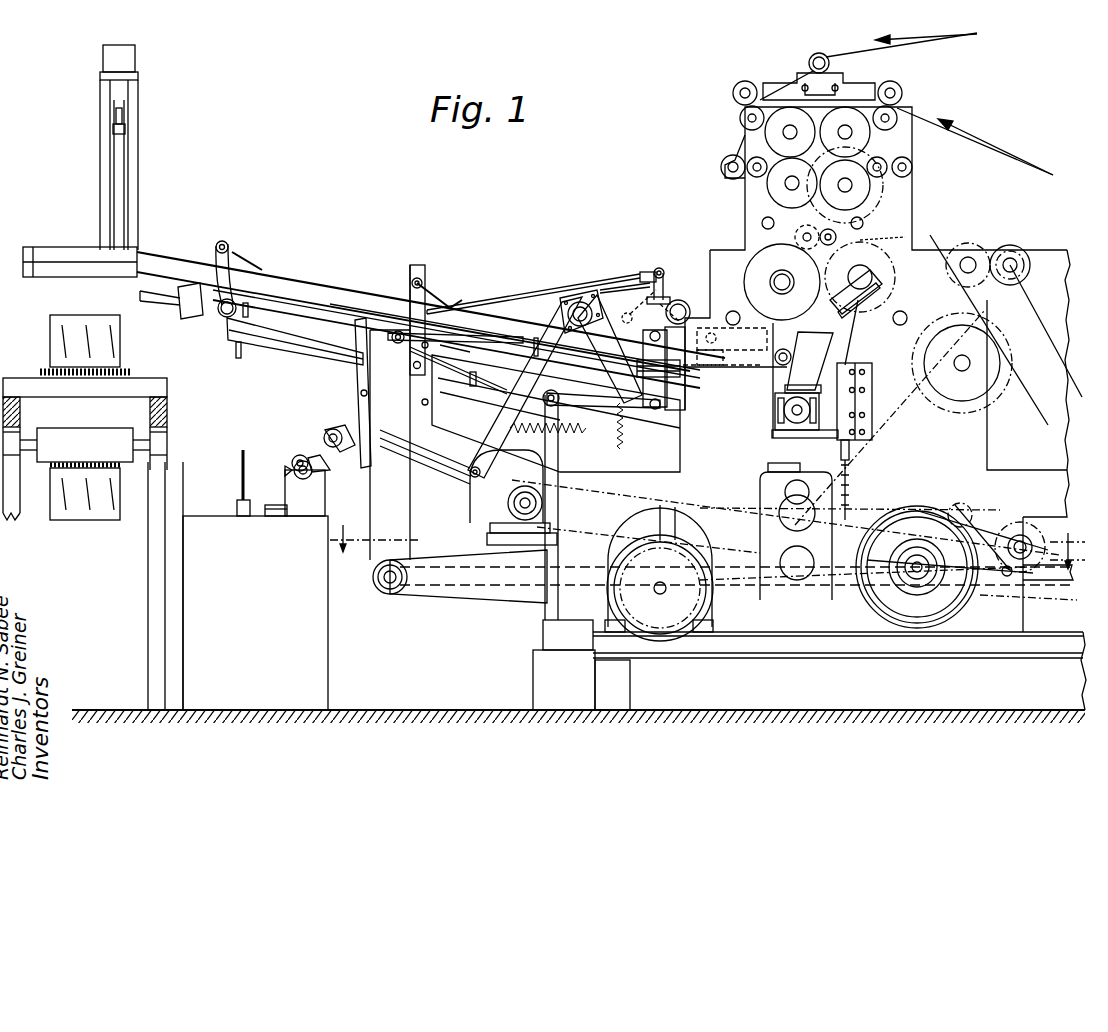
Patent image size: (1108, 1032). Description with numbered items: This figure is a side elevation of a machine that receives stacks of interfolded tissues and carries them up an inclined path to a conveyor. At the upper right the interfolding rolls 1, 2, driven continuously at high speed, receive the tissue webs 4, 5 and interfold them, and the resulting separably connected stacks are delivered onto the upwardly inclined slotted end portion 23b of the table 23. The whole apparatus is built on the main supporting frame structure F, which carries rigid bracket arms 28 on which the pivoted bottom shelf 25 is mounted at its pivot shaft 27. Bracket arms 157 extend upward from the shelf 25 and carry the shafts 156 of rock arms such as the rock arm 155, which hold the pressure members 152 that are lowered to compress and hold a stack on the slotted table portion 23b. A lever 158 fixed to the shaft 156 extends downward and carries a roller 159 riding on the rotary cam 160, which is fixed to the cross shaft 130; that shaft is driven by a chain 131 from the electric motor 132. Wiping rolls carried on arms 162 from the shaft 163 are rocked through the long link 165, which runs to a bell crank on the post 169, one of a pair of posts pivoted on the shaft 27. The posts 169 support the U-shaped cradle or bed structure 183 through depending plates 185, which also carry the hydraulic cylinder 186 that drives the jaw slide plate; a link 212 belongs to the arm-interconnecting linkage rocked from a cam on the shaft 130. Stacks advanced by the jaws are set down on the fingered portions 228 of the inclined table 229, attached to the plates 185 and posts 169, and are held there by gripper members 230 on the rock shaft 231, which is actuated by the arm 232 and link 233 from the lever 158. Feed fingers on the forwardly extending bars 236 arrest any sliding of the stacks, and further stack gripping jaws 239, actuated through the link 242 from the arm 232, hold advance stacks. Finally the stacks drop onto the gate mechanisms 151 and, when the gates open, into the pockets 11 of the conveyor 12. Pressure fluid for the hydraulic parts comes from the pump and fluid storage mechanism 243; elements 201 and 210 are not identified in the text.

The interfolding roll 1 is at (742, 262).
The interfolding roll 2 is at (850, 255).
The main supporting frame structure F is at (905, 237).
The web of tissue material 4 is at (707, 301).
The web of tissue material 5 is at (975, 150).
The pocket or carrier 11 is at (120, 340).
The conveyor 12 is at (115, 372).
The table 23 is at (768, 376).
The slotted end portion of the table 23b is at (668, 380).
The pivoted bottom shelf 25 is at (1060, 580).
The pivot shaft 27 is at (374, 585).
The bracket arm 28 is at (435, 597).
The cross shaft 130 is at (520, 494).
The chain 131 is at (634, 498).
The electric motor 132 is at (932, 497).
The gate mechanism 151 is at (65, 262).
The pressure member 152 is at (700, 300).
The rock arm 155 is at (622, 290).
The shaft 156 is at (580, 302).
The bracket arm 157 is at (595, 360).
The lever 158 is at (556, 330).
The roller 159 is at (468, 478).
The rotary cam 160 is at (472, 512).
The arm 162 is at (628, 302).
The shaft 163 is at (663, 298).
The link 165 is at (530, 292).
The post 169 is at (378, 494).
The cradle or bed structure 183 is at (551, 407).
The plate 185 is at (360, 379).
The hydraulic cylinder 186 is at (298, 350).
The feed tray 201 is at (240, 275).
The pivot arm 210 is at (218, 244).
The link 212 is at (444, 492).
The fingered portion 228 is at (470, 334).
The inclined table 229 is at (300, 300).
The gripper member 230 is at (455, 304).
The rock shaft 231 is at (425, 285).
The arm 232 is at (408, 290).
The link 233 is at (445, 342).
The bar 236 is at (480, 388).
The stack gripping jaw 239 is at (246, 270).
The link 242 is at (318, 305).
The pump and fluid storage mechanism 243 is at (200, 514).